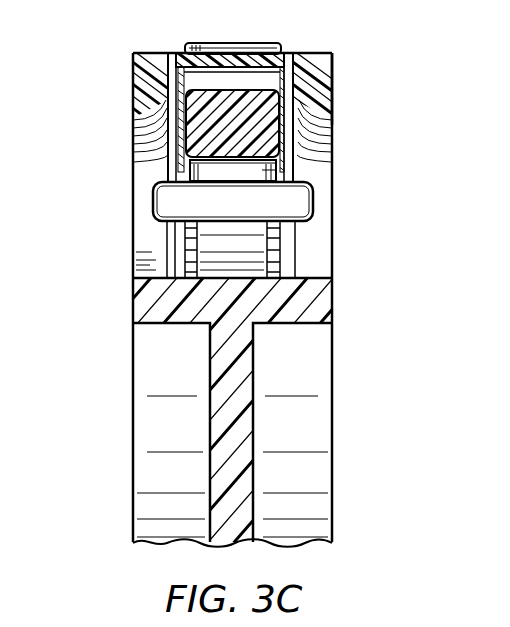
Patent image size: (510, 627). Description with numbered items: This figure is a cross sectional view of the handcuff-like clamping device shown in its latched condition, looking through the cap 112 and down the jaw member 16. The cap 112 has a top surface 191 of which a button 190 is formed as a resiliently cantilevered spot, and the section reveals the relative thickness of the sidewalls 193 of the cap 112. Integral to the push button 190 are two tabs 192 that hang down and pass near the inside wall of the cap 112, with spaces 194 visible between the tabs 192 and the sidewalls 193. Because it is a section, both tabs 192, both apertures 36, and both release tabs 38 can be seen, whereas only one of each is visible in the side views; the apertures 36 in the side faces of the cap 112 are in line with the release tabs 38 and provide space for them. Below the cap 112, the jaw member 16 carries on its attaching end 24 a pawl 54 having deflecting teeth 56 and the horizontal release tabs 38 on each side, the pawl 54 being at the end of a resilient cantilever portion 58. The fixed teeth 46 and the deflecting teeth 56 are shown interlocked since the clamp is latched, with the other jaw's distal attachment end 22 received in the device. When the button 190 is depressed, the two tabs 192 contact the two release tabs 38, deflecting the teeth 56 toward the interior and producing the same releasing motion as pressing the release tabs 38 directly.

The jaw member 16 is at (116, 446).
The distal attachment end 22 is at (257, 90).
The attaching end 24 is at (140, 298).
The apertures 36 is at (140, 133).
The release tabs 38 is at (153, 200).
The fixed teeth 46 is at (190, 172).
The pawl 54 is at (274, 250).
The deflecting teeth 56 is at (280, 170).
The resilient cantilever portion 58 is at (207, 237).
The cap 112 is at (334, 64).
The button 190 is at (207, 43).
The top surface 191 is at (310, 53).
The tabs 192 is at (178, 77).
The sidewalls 193 is at (140, 60).
The spaces 194 is at (160, 104).